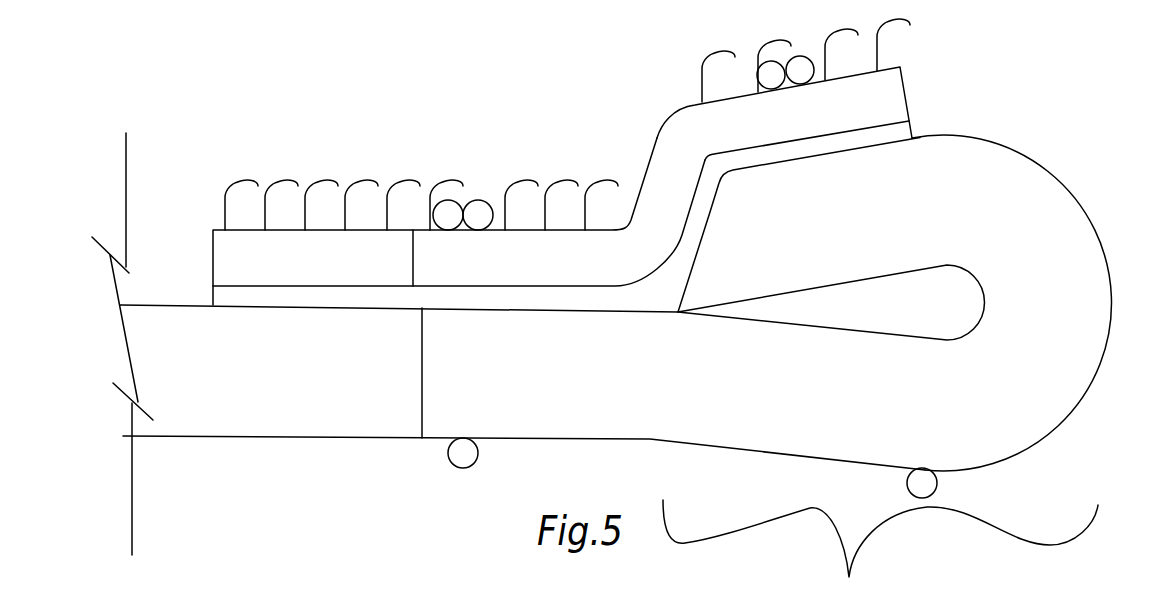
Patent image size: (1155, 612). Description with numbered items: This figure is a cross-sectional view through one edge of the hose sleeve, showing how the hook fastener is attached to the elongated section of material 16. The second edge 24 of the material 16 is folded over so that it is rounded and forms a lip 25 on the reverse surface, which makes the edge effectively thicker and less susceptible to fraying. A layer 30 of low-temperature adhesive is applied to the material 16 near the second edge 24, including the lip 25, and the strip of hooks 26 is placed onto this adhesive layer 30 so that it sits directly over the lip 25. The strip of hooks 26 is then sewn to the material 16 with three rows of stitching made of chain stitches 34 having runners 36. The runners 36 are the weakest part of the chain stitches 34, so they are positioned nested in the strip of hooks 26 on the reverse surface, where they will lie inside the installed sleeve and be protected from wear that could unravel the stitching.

The elongated section of material 16 is at (296, 380).
The second edge 24 is at (851, 577).
The lip 25 is at (1068, 228).
The strip of hooks 26 is at (685, 128).
The layer of low-temperature adhesive 30 is at (538, 300).
The chain stitches 34 is at (463, 468).
The runners 36 is at (479, 200).